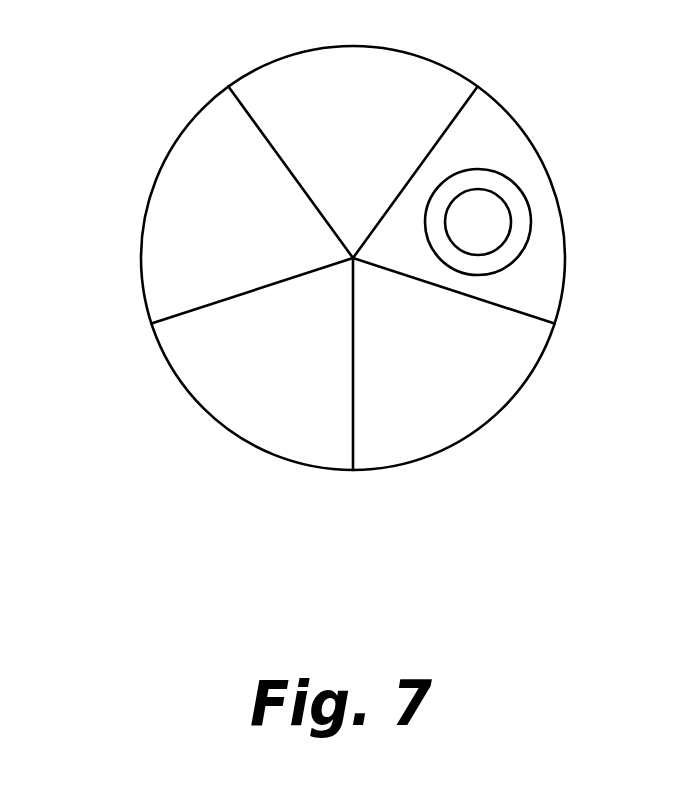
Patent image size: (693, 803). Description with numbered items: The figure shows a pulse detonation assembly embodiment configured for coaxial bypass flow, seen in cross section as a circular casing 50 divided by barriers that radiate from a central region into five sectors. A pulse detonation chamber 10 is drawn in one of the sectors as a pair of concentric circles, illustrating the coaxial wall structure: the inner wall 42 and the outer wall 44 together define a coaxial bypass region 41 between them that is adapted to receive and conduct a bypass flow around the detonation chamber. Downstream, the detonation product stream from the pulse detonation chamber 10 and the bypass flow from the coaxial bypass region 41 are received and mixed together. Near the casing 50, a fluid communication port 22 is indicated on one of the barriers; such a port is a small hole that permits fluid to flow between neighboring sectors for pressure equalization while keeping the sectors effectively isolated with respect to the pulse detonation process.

The pulse detonation chamber 10 is at (355, 251).
The fluid communication port 22 is at (257, 125).
The coaxial bypass region 41 is at (502, 257).
The inner wall 42 is at (510, 232).
The outer wall 44 is at (533, 205).
The casing 50 is at (167, 365).